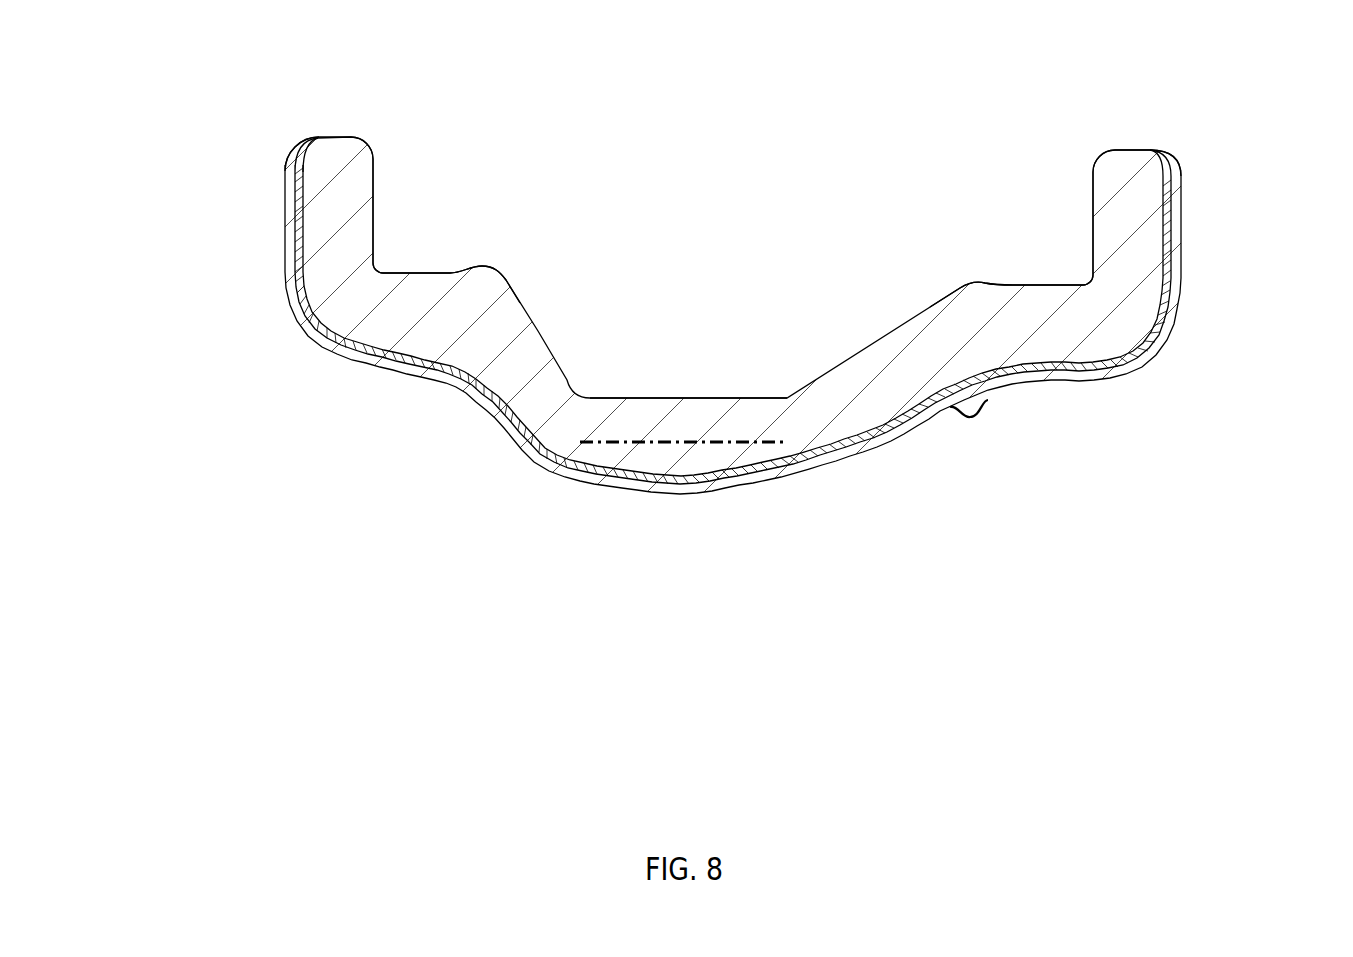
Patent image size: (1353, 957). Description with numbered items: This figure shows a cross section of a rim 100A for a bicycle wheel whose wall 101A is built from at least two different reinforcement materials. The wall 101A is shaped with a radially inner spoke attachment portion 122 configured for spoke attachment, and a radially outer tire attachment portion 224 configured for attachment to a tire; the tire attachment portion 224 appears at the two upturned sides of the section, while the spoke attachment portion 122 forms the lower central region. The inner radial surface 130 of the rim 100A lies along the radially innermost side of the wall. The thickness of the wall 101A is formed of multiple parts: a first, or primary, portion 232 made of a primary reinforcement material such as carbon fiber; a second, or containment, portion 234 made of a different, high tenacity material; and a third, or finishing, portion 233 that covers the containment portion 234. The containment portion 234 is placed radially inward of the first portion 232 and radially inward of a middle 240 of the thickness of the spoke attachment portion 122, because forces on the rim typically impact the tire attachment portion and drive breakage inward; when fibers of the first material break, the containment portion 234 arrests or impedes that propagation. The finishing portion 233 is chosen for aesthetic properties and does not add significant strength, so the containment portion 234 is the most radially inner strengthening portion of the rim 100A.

The rim 100A is at (284, 172).
The wall 101A is at (1183, 180).
The spoke attachment portion 122 is at (656, 304).
The tire attachment portion 224 is at (436, 233).
The middle of a thickness 240 is at (650, 443).
The first portion 232 is at (783, 420).
The third portion 233 is at (802, 470).
The second portion 234 is at (847, 443).
The inner radial surface 130 is at (988, 400).